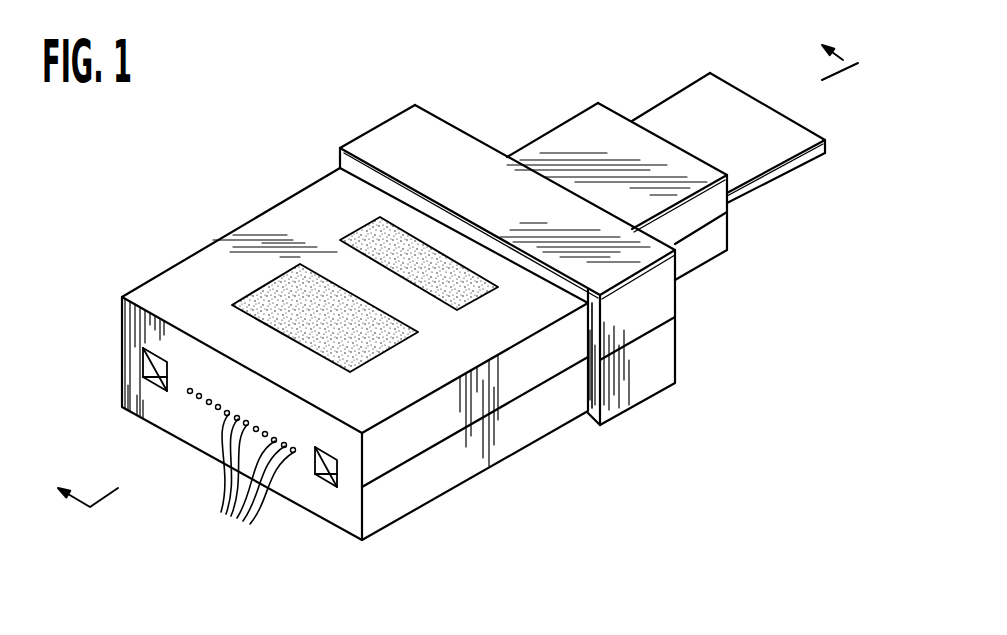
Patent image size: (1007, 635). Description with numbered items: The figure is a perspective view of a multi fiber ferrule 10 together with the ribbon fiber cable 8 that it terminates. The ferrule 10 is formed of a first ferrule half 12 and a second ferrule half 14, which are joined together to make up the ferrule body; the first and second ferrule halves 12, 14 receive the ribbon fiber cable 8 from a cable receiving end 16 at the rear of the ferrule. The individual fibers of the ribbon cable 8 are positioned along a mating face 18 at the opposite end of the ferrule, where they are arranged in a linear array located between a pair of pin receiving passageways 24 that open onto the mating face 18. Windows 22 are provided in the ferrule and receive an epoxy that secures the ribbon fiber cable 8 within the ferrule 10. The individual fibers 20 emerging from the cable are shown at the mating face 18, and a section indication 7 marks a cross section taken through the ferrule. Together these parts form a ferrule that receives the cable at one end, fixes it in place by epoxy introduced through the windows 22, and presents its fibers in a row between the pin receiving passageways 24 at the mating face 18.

The section line 7- 7 is at (448, 266).
The ribbon fiber cable 8 is at (685, 93).
The multi fiber ferrule 10 is at (364, 101).
The first ferrule half 12 is at (537, 433).
The second ferrule half 14 is at (290, 200).
The cable receiving end 16 is at (613, 108).
The mating face 18 is at (128, 328).
The wires 20 is at (242, 471).
The windows 22 is at (272, 287).
The pin receiving passageways 24 is at (143, 377).